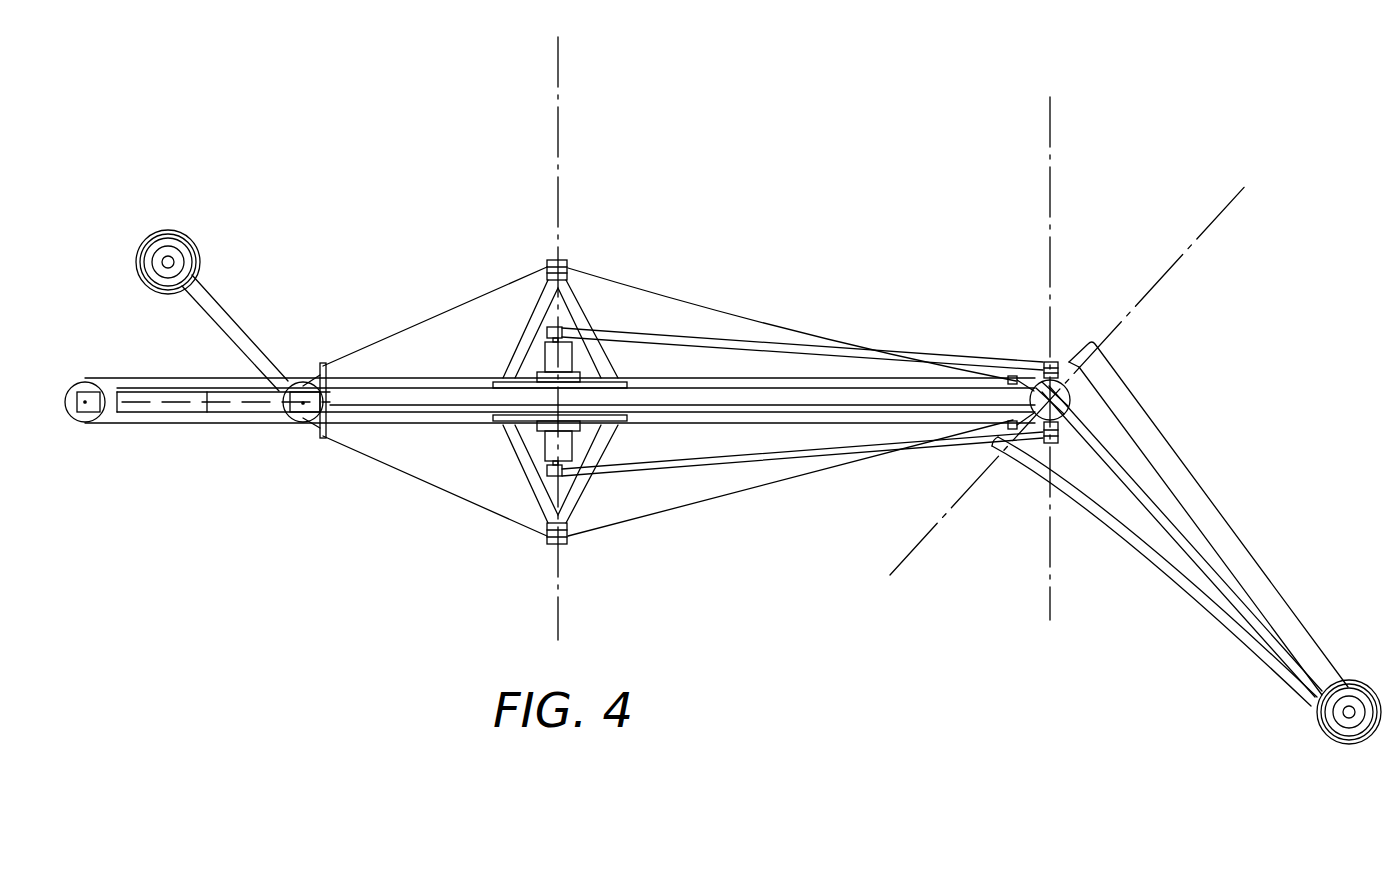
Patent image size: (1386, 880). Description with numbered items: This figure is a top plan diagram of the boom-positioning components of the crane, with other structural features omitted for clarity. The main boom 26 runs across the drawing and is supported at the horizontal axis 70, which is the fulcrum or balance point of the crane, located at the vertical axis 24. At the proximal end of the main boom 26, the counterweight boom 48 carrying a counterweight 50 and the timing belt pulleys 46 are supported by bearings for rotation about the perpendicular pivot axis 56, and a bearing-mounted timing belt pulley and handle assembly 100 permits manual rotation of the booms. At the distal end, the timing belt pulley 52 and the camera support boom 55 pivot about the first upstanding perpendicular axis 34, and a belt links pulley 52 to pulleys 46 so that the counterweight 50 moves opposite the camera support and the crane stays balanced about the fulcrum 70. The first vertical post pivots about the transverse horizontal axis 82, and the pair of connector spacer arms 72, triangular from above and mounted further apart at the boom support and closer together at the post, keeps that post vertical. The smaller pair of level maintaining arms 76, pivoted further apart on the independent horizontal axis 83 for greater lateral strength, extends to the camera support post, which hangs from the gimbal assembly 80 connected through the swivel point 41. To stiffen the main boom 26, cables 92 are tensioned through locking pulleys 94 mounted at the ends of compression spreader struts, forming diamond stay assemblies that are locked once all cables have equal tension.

The vertical axis 24 is at (552, 398).
The main boom 26 is at (427, 387).
The first upstanding perpendicular axis 34 is at (1063, 400).
The swivel point 41 is at (1350, 711).
The timing belt pulleys 46 is at (291, 375).
The counterweight boom 48 is at (253, 330).
The counterweight 50 is at (197, 250).
The timing belt pulley 52 is at (1061, 362).
The camera support boom 55 is at (1117, 487).
The perpendicular pivot axis 56 is at (303, 404).
The horizontal axis 70 is at (557, 155).
The connector spacer arm means 72 is at (696, 348).
The level maintaining arm means 76 is at (1182, 602).
The gimbal assembly 80 is at (1358, 743).
The transverse horizontal axis 82 is at (1049, 150).
The independent horizontal axis 83 is at (1167, 272).
The cable 92 is at (712, 306).
The locking pulleys 94 is at (568, 262).
The timing belt pulley and handle assembly 100 is at (85, 423).